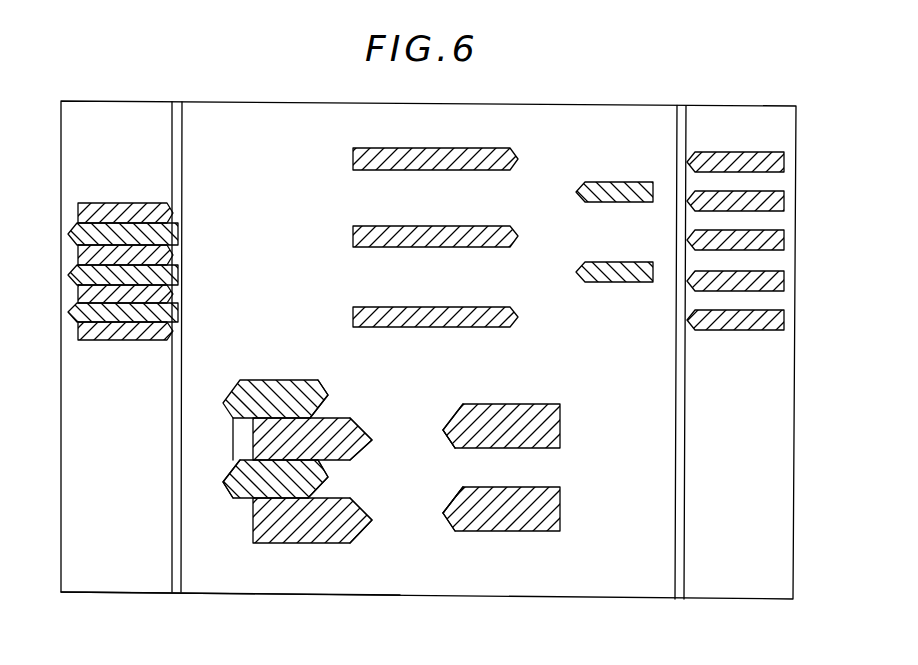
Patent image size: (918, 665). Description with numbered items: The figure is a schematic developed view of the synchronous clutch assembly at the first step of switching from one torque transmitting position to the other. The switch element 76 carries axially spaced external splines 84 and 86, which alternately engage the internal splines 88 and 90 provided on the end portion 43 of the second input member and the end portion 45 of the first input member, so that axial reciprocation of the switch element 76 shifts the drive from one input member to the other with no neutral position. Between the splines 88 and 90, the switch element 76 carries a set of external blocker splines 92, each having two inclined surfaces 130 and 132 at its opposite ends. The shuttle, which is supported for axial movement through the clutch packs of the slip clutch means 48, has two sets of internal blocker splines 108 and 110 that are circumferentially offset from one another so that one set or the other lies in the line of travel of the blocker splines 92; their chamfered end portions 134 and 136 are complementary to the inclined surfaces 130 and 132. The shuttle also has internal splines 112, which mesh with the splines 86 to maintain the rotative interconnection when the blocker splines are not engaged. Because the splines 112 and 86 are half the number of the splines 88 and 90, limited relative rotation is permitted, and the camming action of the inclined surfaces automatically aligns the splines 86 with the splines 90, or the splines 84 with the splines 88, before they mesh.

The switch element 76 is at (568, 105).
The end portion of second input member 43 is at (68, 440).
The end portion of first input member 45 is at (777, 453).
The slip clutch means 48 is at (483, 593).
The external splines 84 is at (178, 270).
The internal splines 88 is at (166, 332).
The external splines 86 is at (425, 235).
The internal splines 112 is at (612, 198).
The internal splines 90 is at (784, 237).
The blocker splines 92 is at (233, 419).
The blocker splines 108 is at (342, 419).
The blocker splines 110 is at (555, 425).
The chamfered end portion 136 is at (320, 380).
The chamfered end portion 134 is at (453, 421).
The inclined surface 130 is at (322, 475).
The inclined surface 132 is at (238, 500).